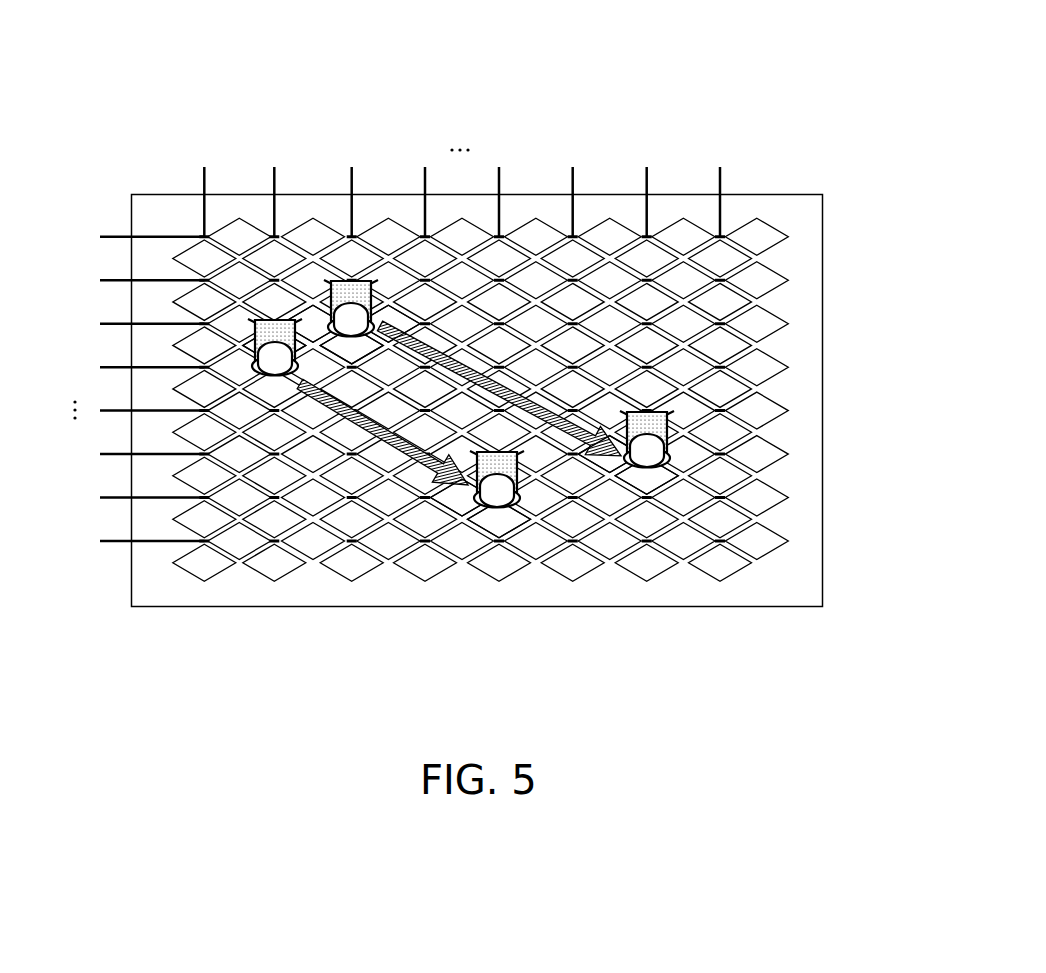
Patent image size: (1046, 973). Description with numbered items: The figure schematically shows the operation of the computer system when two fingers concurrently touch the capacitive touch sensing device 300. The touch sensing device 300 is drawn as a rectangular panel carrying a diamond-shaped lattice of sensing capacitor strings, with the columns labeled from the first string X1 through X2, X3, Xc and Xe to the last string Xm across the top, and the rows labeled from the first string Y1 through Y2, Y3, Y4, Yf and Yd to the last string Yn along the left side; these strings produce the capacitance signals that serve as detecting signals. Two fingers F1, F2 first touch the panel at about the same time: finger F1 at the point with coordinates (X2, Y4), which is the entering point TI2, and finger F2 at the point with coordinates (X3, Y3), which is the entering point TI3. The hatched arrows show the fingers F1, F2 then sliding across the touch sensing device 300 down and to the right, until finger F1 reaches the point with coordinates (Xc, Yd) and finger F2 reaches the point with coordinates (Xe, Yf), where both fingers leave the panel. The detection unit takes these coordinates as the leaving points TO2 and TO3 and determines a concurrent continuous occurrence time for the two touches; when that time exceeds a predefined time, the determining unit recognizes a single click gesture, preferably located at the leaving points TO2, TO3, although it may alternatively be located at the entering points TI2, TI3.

The touch sensing device 300 is at (733, 105).
The entering point TI2 is at (325, 335).
The entering point TI3 is at (400, 325).
The leaving point TO2 is at (475, 499).
The leaving point TO3 is at (628, 457).
The finger F1 is at (387, 416).
The finger F2 is at (510, 360).
The sensing capacitor string X1 is at (204, 188).
The sensing capacitor string X2 is at (274, 188).
The sensing capacitor string X3 is at (351, 188).
The sensing capacitor string Xc is at (498, 188).
The sensing capacitor string Xe is at (646, 188).
The sensing capacitor string Xm is at (720, 188).
The sensing capacitor string Y1 is at (133, 237).
The sensing capacitor string Y2 is at (133, 280).
The sensing capacitor string Y3 is at (133, 324).
The sensing capacitor string Y4 is at (133, 367).
The sensing capacitor string Yf is at (133, 454).
The sensing capacitor string Yd is at (133, 497).
The sensing capacitor string Yn is at (133, 541).